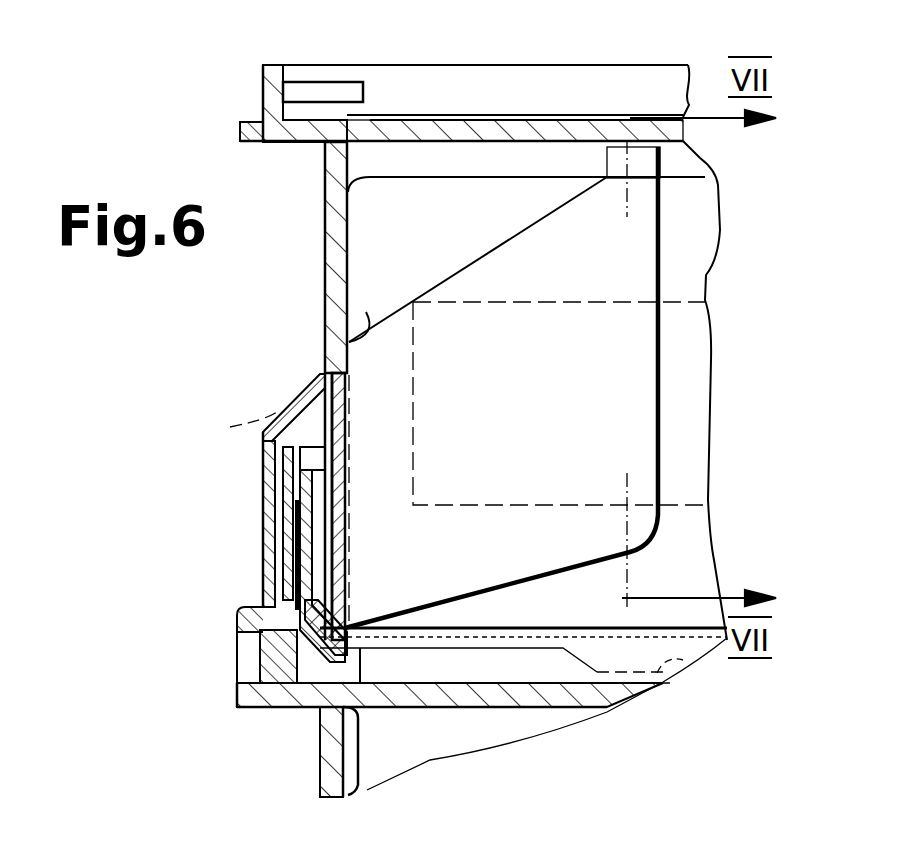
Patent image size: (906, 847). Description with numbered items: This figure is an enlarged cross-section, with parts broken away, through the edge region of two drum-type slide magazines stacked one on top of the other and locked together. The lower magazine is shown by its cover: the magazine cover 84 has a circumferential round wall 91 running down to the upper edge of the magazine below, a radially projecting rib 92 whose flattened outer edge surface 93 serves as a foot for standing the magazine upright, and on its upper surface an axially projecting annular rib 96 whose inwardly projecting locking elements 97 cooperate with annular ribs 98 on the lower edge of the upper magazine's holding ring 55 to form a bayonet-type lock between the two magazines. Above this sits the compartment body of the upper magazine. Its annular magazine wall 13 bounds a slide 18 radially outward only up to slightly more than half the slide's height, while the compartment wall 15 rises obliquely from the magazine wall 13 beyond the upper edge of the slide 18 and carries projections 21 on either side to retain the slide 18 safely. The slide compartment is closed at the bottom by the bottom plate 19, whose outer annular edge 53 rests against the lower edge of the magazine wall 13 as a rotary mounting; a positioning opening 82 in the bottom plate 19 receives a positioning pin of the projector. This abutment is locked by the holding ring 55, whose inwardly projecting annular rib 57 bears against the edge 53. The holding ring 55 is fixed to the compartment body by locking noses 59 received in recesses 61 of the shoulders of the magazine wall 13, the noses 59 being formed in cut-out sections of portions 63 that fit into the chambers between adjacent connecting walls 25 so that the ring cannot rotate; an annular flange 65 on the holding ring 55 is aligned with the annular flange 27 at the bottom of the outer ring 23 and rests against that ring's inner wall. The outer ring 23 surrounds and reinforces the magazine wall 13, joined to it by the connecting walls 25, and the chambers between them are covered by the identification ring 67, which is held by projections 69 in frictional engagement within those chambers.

The annular magazine wall 13 is at (305, 573).
The compartment wall 15 is at (347, 347).
The slide 18 is at (412, 177).
The bottom plate 19 is at (297, 708).
The projection 21 is at (640, 158).
The outer ring 23 is at (270, 587).
The connecting wall 25 is at (277, 412).
The annular flange 27 is at (237, 630).
The outer annular edge 53 is at (355, 632).
The holding ring 55 is at (250, 690).
The annular rib 57 is at (367, 640).
The locking nose 59 is at (278, 517).
The recess 61 is at (315, 478).
The portion 63 is at (328, 483).
The annular flange 65 is at (343, 630).
The identification ring 67 is at (305, 390).
The projection 69 is at (300, 465).
The positioning opening 82 is at (685, 668).
The magazine cover 84 is at (524, 135).
The round wall 91 is at (323, 207).
The rib 92 is at (240, 122).
The edge surface 93 is at (240, 137).
The annular rib 96 is at (270, 68).
The locking element 97 is at (305, 93).
The annular rib 98 is at (247, 707).